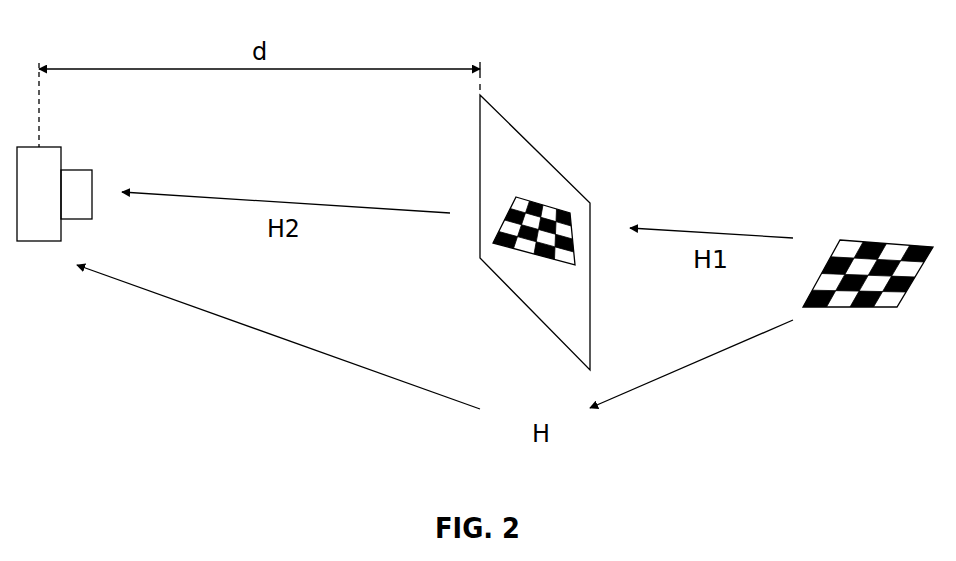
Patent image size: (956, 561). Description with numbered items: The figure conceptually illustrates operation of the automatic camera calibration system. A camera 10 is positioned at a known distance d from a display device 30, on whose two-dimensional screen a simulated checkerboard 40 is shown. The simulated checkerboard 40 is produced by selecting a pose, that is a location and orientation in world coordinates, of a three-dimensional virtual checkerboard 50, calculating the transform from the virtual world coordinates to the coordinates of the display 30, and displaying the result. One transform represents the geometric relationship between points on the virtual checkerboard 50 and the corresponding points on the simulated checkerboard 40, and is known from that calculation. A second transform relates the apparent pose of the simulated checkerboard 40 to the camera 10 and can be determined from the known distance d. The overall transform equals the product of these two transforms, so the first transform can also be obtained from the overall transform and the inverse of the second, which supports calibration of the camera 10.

The camera 10 is at (54, 182).
The display device 30 is at (500, 112).
The simulated checkerboard 40 is at (512, 251).
The virtual checkerboard 50 is at (877, 240).